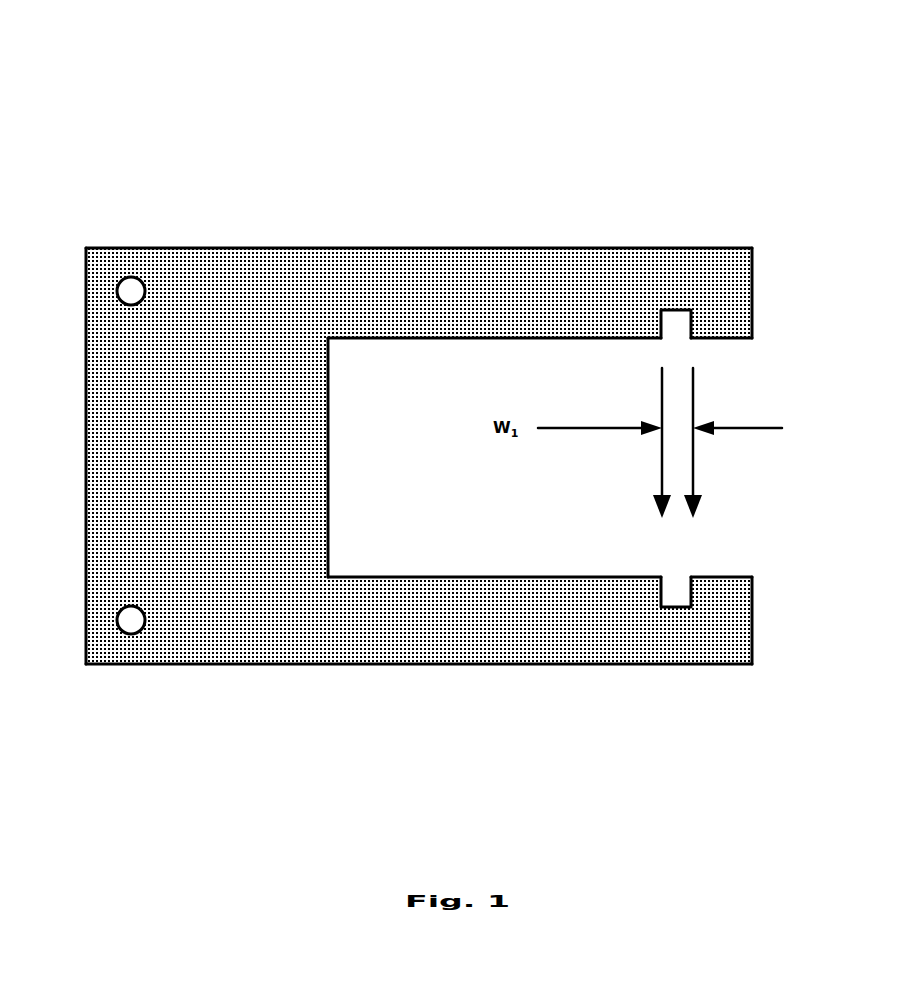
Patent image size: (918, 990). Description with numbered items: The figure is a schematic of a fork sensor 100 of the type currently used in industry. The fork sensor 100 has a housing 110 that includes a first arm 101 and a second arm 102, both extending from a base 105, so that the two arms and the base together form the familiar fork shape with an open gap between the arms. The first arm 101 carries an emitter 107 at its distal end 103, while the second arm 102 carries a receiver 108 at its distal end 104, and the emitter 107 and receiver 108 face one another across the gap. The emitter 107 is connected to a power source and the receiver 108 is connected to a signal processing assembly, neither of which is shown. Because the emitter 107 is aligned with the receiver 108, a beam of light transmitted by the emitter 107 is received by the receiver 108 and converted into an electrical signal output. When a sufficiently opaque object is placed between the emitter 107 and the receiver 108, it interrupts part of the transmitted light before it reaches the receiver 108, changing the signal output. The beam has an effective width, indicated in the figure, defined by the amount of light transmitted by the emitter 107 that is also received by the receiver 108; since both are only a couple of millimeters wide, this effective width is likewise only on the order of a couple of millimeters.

The fork sensor 100 is at (108, 61).
The first arm 101 is at (500, 247).
The second arm 102 is at (500, 667).
The distal end 103 is at (753, 282).
The distal end 104 is at (753, 623).
The base 105 is at (82, 470).
The emitter 107 is at (686, 337).
The receiver 108 is at (672, 580).
The housing 110 is at (178, 230).